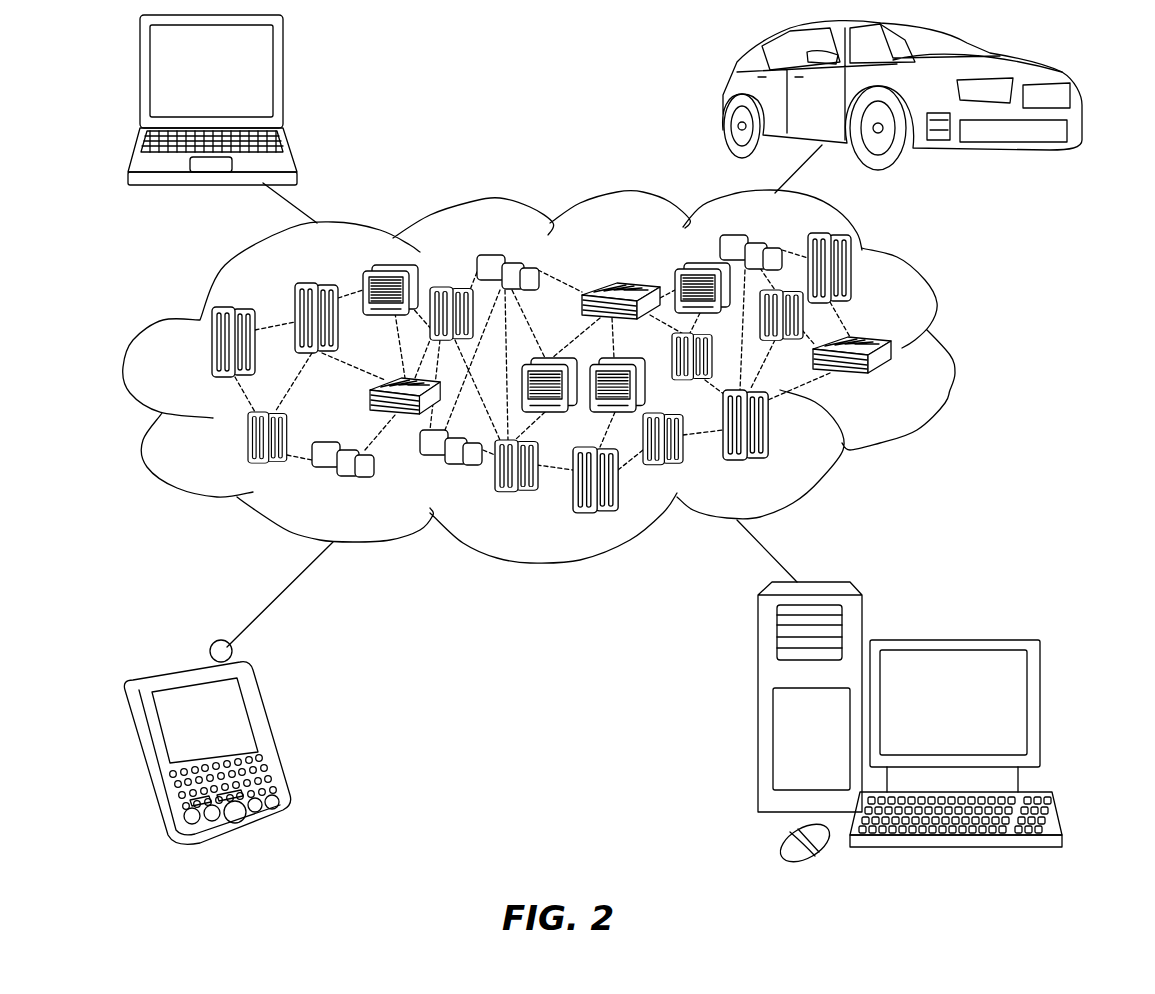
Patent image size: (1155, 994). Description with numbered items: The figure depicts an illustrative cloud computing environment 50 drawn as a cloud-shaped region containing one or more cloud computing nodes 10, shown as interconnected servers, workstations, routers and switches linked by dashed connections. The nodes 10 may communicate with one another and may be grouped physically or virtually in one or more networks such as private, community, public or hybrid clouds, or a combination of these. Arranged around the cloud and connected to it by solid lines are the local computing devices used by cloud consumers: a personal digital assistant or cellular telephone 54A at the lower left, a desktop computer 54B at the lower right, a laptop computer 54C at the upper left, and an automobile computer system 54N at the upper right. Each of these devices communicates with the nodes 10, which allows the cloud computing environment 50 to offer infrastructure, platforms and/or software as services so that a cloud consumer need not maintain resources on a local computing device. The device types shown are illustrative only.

The cloud computing nodes 10 is at (893, 382).
The cloud computing environment 50 is at (950, 353).
The personal digital assistant or cellular telephone 54A is at (272, 738).
The desktop computer 54B is at (950, 638).
The laptop computer 54C is at (283, 80).
The automobile computer system 54N is at (735, 104).